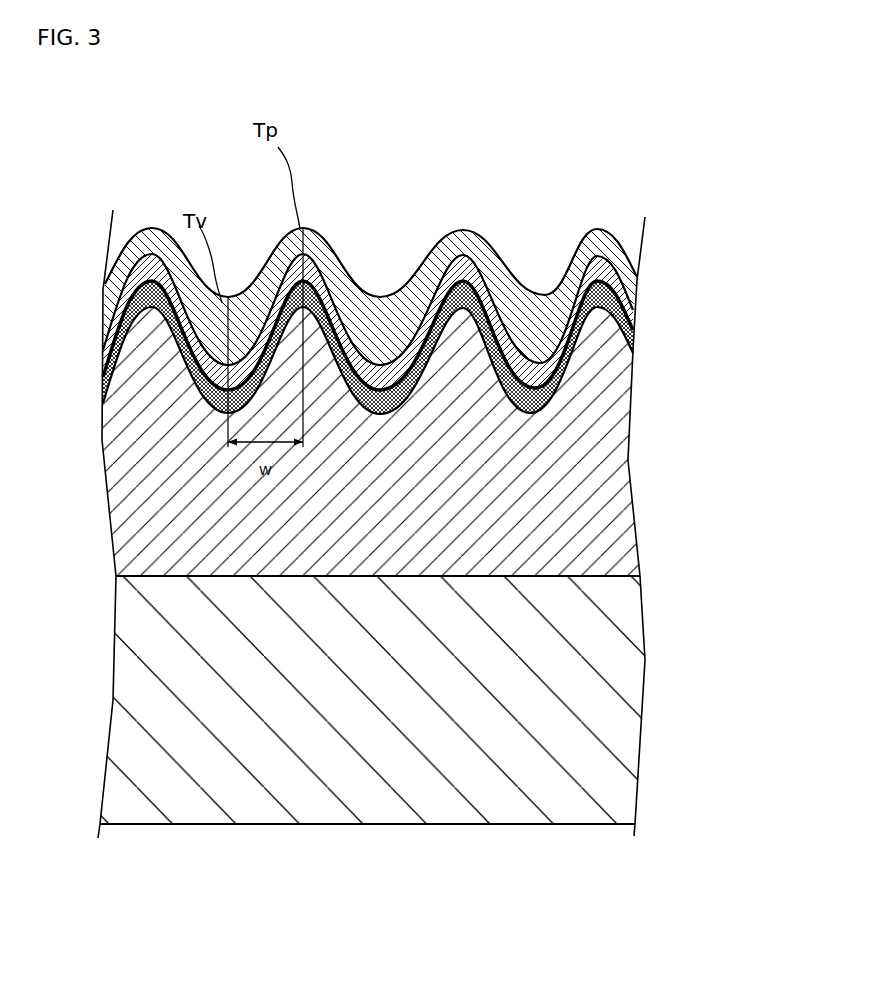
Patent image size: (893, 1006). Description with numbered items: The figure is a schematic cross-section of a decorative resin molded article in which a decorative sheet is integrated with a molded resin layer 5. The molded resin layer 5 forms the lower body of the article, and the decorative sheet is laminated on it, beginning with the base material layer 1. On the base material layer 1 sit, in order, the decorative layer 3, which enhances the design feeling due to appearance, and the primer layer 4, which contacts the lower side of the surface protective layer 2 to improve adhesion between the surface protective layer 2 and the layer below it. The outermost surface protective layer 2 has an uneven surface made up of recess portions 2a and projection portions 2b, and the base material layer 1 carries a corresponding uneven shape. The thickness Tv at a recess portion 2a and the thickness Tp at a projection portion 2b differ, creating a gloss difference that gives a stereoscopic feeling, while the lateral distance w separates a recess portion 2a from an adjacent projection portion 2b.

The base material layer 1 is at (628, 445).
The surface protective layer 2 is at (637, 278).
The recess portion 2a is at (237, 292).
The projection portion 2b is at (308, 229).
The decorative layer 3 is at (633, 352).
The primer layer 4 is at (633, 328).
The molded resin layer 5 is at (647, 697).